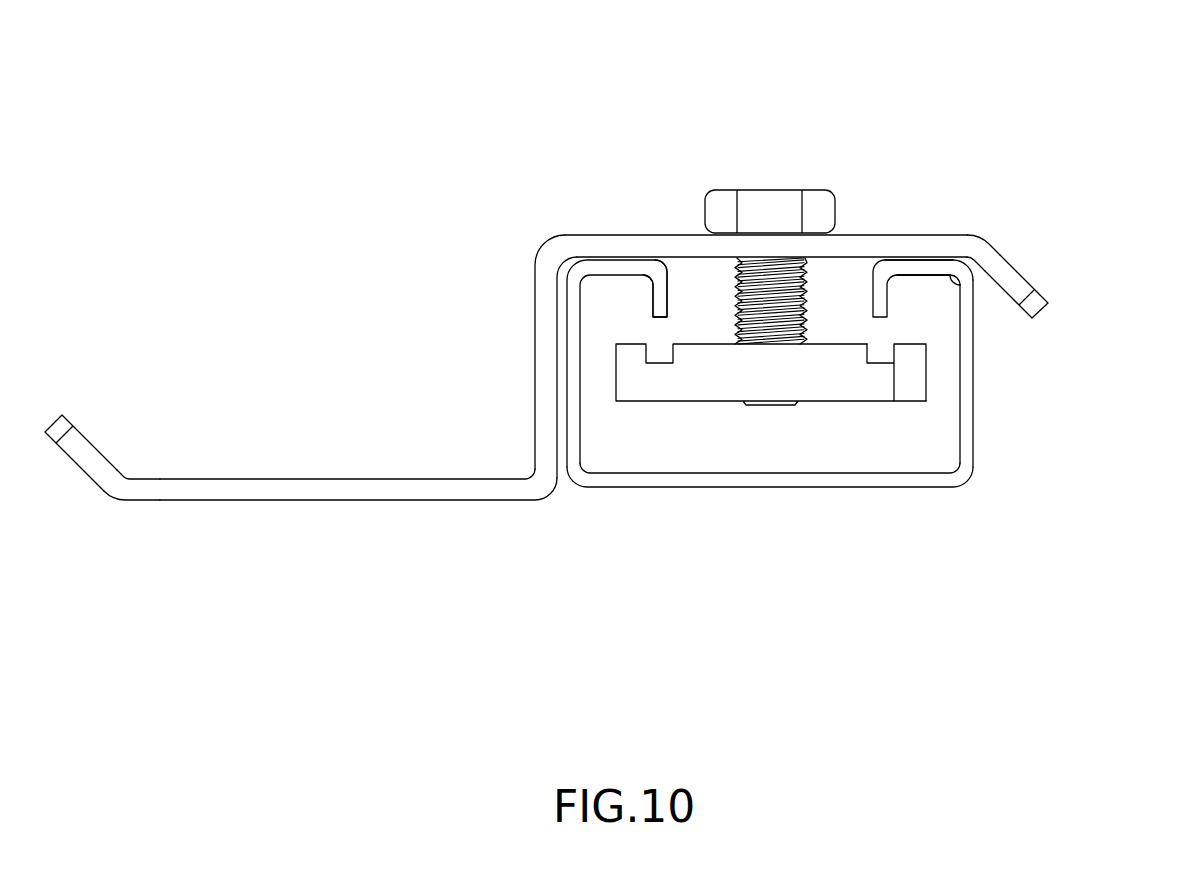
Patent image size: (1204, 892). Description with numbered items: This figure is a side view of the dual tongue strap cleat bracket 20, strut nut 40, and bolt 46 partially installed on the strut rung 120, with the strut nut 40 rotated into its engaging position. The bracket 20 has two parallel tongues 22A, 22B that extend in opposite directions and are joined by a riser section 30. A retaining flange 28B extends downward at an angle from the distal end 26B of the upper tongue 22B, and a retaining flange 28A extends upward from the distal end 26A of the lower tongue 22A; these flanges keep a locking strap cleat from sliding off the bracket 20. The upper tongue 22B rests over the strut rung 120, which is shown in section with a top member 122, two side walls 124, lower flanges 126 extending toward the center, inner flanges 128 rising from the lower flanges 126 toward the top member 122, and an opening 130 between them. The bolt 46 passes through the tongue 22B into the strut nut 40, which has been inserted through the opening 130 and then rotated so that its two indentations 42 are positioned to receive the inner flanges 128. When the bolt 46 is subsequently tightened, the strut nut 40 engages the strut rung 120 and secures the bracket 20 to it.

The dual tongue strap cleat bracket 20 is at (272, 141).
The tongue 22A is at (365, 490).
The tongue 22B is at (893, 242).
The distal end 26A is at (127, 475).
The distal end 26B is at (978, 235).
The retaining flange 28A is at (83, 449).
The retaining flange 28B is at (1022, 278).
The riser section 30 is at (547, 315).
The strut nut 40 is at (729, 377).
The indentation 42 is at (878, 363).
The bolt 46 is at (757, 207).
The strut rung 120 is at (973, 445).
The top member 122 is at (795, 478).
The side wall 124 is at (967, 413).
The lower flange 126 is at (917, 270).
The inner flange 128 is at (878, 300).
The opening 130 is at (705, 293).